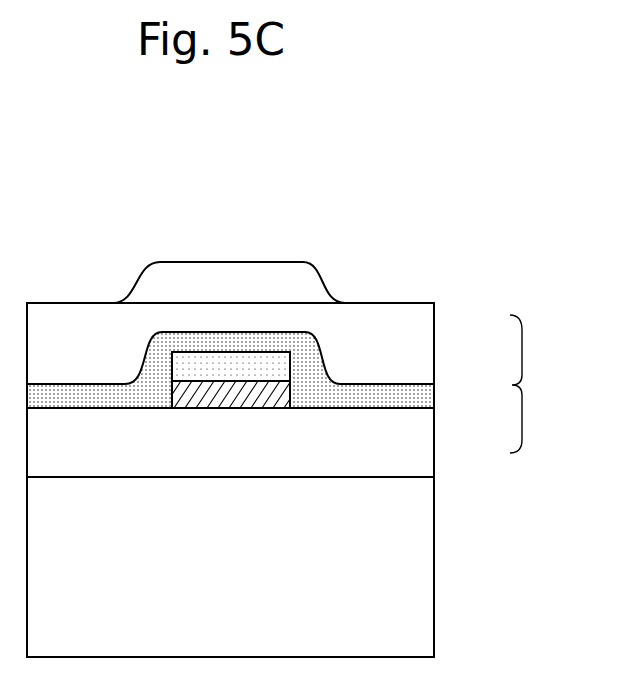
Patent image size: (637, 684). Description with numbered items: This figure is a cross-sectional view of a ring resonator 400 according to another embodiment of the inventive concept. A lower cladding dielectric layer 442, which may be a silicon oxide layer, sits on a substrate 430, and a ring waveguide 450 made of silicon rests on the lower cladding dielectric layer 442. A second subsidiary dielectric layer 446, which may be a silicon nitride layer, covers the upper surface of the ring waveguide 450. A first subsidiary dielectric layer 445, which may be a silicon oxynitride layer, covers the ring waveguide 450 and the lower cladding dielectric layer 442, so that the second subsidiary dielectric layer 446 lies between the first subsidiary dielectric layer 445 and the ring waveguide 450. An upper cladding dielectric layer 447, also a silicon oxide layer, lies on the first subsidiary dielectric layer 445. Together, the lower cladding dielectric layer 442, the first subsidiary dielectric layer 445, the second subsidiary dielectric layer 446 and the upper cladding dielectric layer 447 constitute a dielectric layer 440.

The ring resonator 400 is at (490, 193).
The substrate 430 is at (427, 573).
The lower cladding dielectric layer 442 is at (427, 443).
The first subsidiary dielectric layer 445 is at (428, 397).
The second subsidiary dielectric layer 446 is at (273, 365).
The upper cladding dielectric layer 447 is at (427, 322).
The ring waveguide 450 is at (228, 393).
The dielectric layer 440 is at (535, 384).